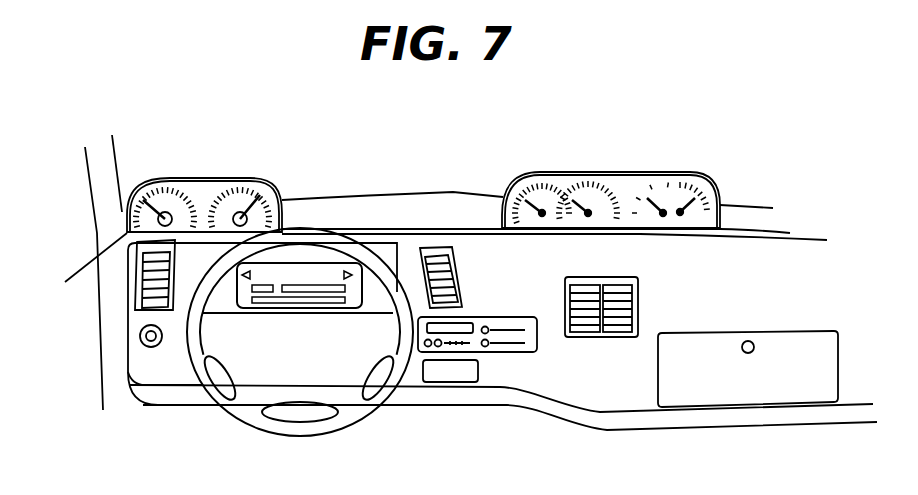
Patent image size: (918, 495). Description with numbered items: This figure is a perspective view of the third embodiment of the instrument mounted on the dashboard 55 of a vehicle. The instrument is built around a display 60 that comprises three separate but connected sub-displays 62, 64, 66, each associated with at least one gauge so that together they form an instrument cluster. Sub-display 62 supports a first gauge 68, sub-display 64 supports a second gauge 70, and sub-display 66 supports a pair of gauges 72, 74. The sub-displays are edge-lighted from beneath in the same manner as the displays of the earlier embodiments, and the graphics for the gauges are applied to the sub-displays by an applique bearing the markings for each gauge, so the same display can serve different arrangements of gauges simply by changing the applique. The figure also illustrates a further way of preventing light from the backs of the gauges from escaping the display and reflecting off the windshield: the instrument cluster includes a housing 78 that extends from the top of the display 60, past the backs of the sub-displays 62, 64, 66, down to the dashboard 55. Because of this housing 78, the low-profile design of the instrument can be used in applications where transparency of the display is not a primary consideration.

The dashboard 55 is at (438, 224).
The display 60 is at (596, 188).
The sub-display 62 is at (548, 192).
The sub-display 64 is at (607, 185).
The sub-display 66 is at (673, 178).
The first gauge 68 is at (542, 217).
The second gauge 70 is at (588, 217).
The gauge 72 is at (663, 217).
The gauge 74 is at (681, 216).
The housing 78 is at (712, 186).